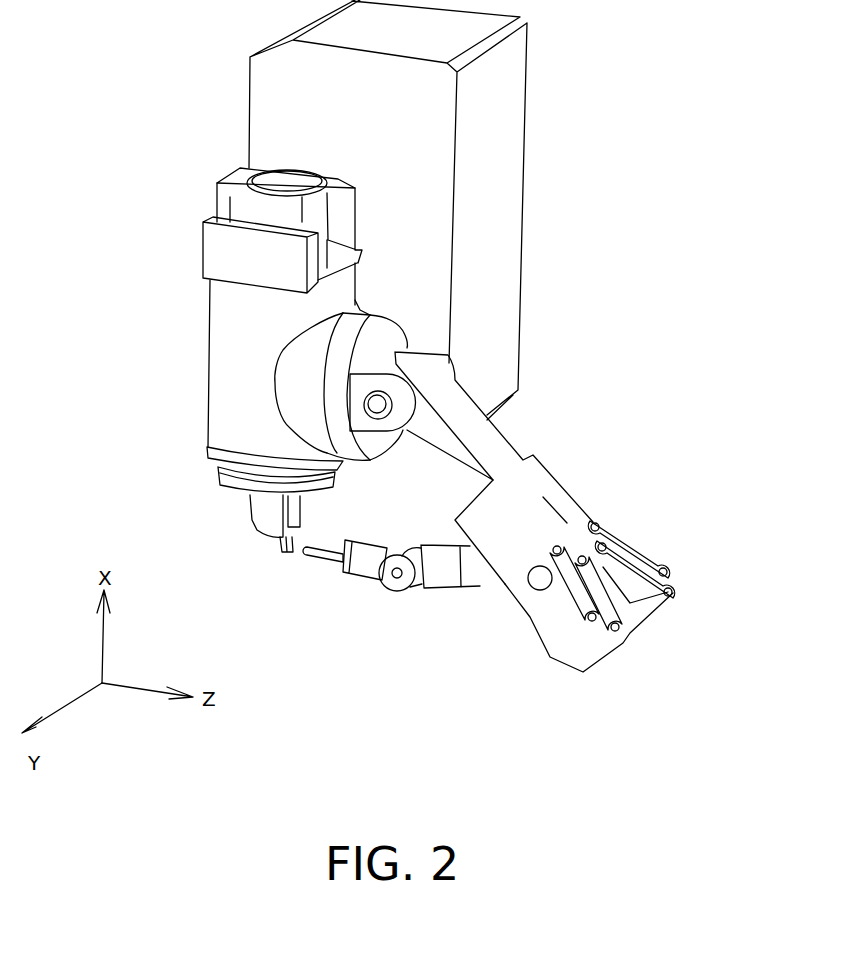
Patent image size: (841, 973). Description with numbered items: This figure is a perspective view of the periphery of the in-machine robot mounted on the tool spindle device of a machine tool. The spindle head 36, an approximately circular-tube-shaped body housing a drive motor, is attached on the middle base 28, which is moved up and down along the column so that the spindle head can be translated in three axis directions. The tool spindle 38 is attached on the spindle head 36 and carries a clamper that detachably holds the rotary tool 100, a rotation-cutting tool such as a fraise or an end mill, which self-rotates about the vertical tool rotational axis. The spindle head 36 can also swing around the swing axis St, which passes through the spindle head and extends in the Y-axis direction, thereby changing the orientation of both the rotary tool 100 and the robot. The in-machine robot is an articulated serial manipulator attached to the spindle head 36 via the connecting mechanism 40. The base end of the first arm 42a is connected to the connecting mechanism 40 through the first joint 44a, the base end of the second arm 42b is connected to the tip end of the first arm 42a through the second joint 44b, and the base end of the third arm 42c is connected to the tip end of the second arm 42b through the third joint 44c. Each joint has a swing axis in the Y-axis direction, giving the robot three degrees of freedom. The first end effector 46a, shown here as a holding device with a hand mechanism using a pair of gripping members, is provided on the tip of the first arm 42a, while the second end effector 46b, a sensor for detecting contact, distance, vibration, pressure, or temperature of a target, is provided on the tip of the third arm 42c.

The middle base 28 is at (512, 142).
The spindle head 36 is at (222, 362).
The swing axis St is at (237, 378).
The tool spindle 38 is at (227, 492).
The rotary tool 100 is at (273, 549).
The connecting mechanism 40 is at (383, 329).
The first joint 44a is at (457, 358).
The second joint 44b is at (530, 566).
The first arm 42a is at (510, 458).
The second arm 42b is at (478, 573).
The third arm 42c is at (360, 572).
The third joint 44c is at (407, 590).
The first end effector 46a is at (657, 558).
The second end effector 46b is at (323, 563).